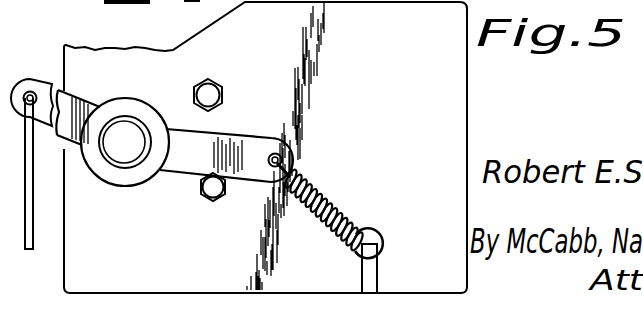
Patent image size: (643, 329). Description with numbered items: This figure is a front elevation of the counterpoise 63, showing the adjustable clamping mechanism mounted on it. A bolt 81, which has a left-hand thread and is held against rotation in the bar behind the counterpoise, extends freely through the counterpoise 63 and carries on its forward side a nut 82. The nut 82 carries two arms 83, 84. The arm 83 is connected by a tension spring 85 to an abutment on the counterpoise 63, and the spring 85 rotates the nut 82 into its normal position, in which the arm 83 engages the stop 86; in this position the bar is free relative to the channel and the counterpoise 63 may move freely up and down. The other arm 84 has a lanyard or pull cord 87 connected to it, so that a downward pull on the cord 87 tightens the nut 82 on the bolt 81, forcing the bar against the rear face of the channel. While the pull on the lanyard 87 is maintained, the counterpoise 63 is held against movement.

The counterpoise 63 is at (362, 91).
The bolt 81 is at (119, 128).
The nut 82 is at (137, 106).
The arm 83 is at (228, 137).
The arm 84 is at (50, 79).
The tension spring 85 is at (333, 200).
The stop 86 is at (212, 201).
The lanyard or pull cord 87 is at (30, 217).